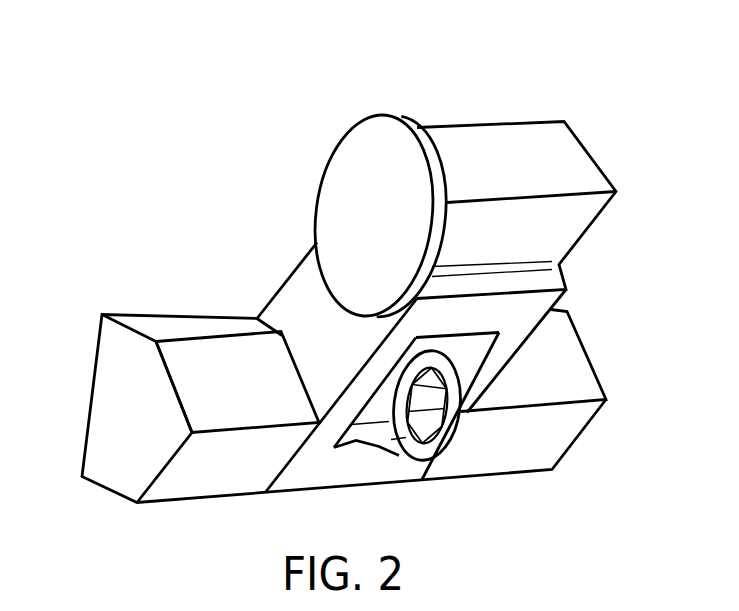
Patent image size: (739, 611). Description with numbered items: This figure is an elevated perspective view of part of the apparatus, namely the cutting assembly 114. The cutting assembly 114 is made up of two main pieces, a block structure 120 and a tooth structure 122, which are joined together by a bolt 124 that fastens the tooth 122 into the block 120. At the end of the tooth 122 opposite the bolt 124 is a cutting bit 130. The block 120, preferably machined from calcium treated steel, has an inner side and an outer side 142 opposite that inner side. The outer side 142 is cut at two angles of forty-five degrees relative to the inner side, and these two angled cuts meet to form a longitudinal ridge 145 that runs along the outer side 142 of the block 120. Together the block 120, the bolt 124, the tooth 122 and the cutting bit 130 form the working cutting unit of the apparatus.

The cutting assembly 114 is at (197, 259).
The block structure 120 is at (120, 494).
The outer side 142 is at (266, 400).
The tooth structure 122 is at (482, 128).
The cutting bit 130 is at (393, 115).
The bolt 124 is at (393, 454).
The longitudinal ridge 145 is at (522, 420).